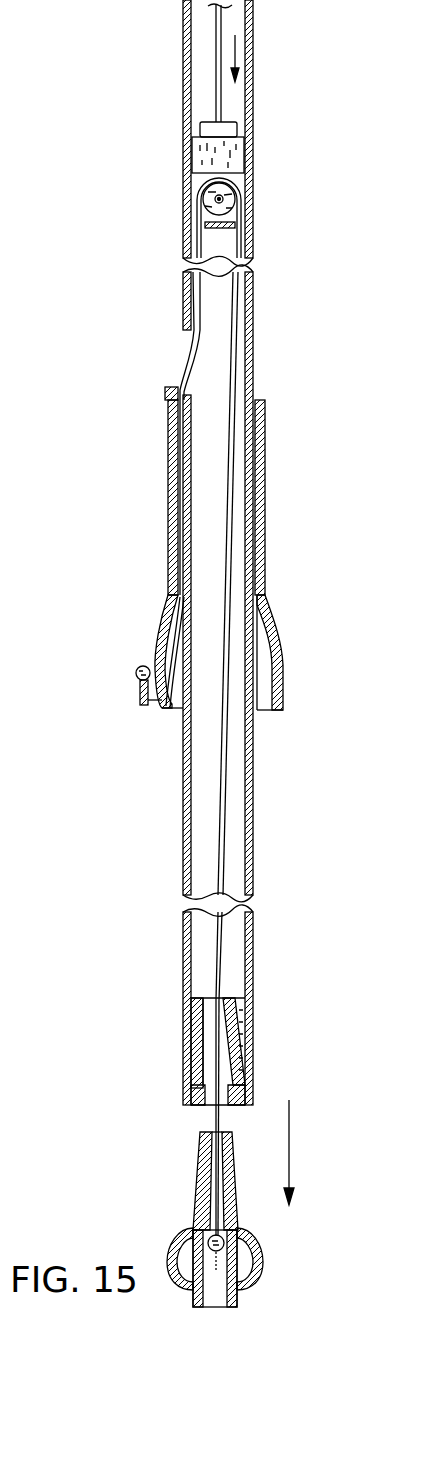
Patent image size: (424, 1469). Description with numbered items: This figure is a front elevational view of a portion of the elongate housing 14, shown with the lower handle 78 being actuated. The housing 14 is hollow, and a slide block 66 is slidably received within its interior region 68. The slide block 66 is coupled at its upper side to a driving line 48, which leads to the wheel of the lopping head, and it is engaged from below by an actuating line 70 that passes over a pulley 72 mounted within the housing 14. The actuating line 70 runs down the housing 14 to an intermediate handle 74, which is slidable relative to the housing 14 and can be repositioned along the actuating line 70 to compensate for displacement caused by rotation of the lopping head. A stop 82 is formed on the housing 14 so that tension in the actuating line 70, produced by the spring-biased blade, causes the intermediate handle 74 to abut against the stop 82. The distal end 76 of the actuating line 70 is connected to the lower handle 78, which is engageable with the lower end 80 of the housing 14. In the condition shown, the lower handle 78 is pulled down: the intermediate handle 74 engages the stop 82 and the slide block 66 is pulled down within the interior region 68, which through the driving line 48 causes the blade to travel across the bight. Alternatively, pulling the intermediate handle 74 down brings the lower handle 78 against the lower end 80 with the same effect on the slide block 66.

The elongate housing 14 is at (185, 246).
The driving line 48 is at (216, 91).
The slide block 66 is at (205, 162).
The interior region 68 is at (215, 300).
The actuating line 70 is at (238, 385).
The pulley 72 is at (224, 203).
The intermediate handle 74 is at (168, 545).
The distal end 76 is at (205, 1232).
The lower handle 78 is at (233, 1207).
The lower end 80 is at (182, 1107).
The stop 82 is at (172, 386).